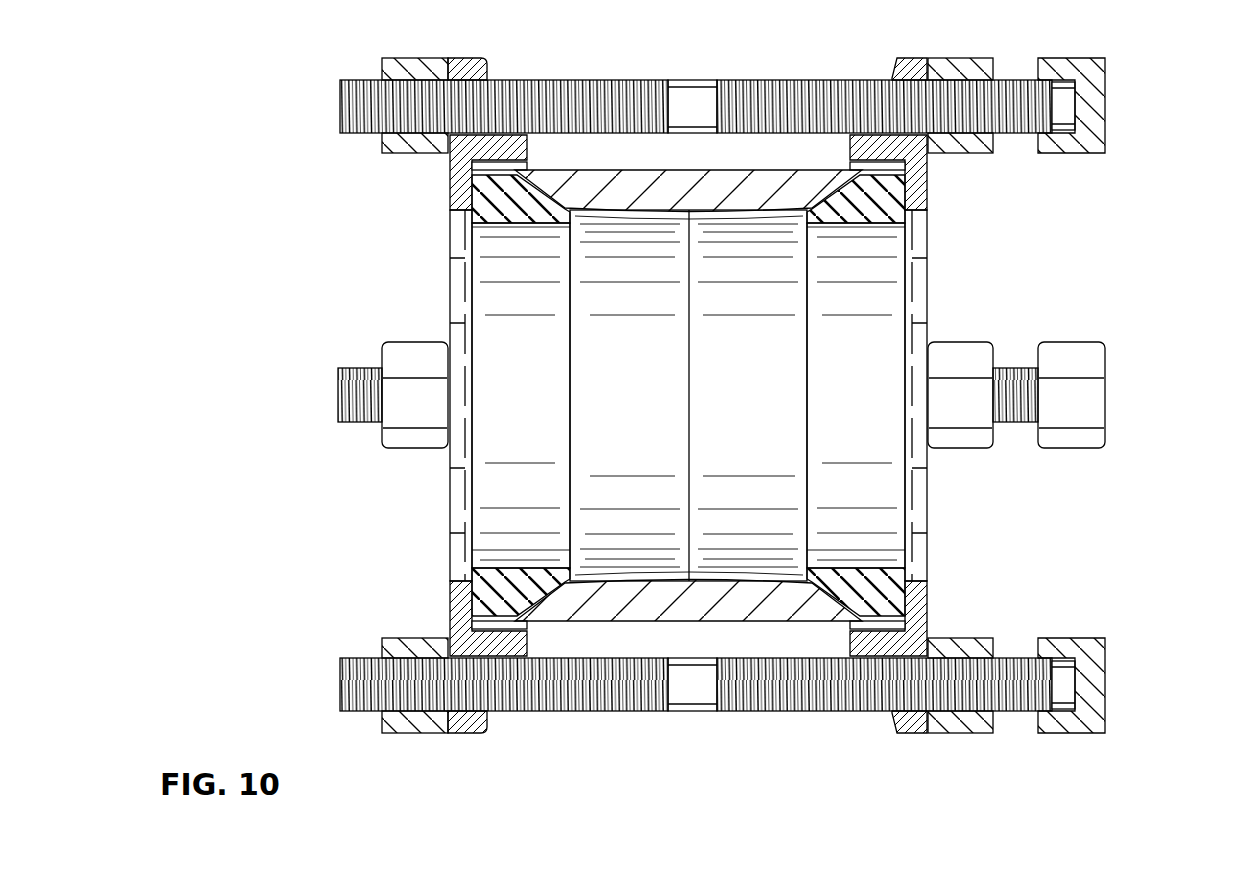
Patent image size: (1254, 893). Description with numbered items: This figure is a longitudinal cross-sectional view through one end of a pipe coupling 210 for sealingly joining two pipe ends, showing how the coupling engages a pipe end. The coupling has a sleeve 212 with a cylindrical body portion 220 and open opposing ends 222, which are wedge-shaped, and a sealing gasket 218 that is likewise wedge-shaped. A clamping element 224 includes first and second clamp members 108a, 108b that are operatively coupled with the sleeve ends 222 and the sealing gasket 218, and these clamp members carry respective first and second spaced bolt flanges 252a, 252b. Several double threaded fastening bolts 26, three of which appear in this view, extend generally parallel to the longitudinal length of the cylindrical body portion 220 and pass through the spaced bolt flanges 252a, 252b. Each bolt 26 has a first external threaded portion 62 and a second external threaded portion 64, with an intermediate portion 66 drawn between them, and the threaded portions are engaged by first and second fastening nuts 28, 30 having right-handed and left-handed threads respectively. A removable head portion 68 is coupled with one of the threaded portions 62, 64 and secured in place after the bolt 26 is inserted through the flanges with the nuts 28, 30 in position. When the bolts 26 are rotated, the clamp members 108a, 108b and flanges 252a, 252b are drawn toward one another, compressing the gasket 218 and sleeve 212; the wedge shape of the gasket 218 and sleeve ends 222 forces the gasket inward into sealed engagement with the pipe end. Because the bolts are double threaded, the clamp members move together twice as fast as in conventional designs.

The pipe coupling 210 is at (750, 418).
The clamping element 224 is at (677, 431).
The double threaded fastening bolt 26 is at (677, 380).
The second external threaded portion 64 is at (593, 80).
The unthreaded portion 66 is at (690, 88).
The first external threaded portion 62 is at (783, 80).
The second fastening nut 30 is at (410, 153).
The first fastening nut 28 is at (967, 153).
The removable head portion 68 is at (1072, 153).
The second spaced bolt flange 252b is at (499, 396).
The first spaced bolt flange 252a is at (872, 398).
The second clamp member 108b is at (437, 395).
The first clamp member 108a is at (940, 395).
The sleeve 212 is at (688, 380).
The cylindrical body portion 220 is at (746, 182).
The open opposing ends 222 is at (540, 182).
The sealing gasket 218 is at (685, 395).